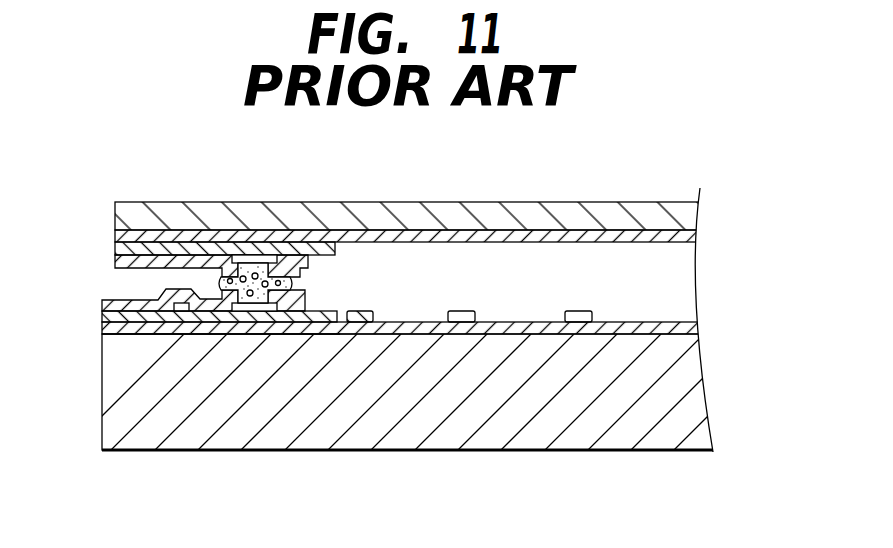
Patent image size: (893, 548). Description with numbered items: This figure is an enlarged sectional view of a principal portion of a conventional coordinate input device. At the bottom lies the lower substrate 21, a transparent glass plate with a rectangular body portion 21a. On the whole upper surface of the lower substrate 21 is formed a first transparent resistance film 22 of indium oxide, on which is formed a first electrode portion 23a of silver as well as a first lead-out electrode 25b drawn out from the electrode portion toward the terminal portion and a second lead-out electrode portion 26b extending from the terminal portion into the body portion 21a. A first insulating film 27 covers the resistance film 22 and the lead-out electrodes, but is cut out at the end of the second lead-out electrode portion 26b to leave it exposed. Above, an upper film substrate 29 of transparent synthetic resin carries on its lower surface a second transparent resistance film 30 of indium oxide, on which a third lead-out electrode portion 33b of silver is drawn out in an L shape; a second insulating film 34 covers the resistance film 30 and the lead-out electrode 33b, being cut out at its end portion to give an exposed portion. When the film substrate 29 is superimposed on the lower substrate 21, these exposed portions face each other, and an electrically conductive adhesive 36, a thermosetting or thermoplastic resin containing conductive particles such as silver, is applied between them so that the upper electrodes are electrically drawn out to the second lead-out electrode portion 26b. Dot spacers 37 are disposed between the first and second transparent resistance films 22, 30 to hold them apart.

The upper film substrate 29 is at (640, 209).
The second transparent resistance film 30 is at (171, 231).
The second insulating film 34 is at (115, 263).
The third lead-out electrode portion 33b is at (258, 252).
The electrically conductive adhesive 36 is at (296, 280).
The first insulating film 27 is at (102, 317).
The second lead-out electrode portion 26b is at (250, 312).
The first electrode portion 23a is at (368, 311).
The dot spacers 37 is at (577, 311).
The first transparent resistance film 22 is at (695, 328).
The first lead-out electrode 25b is at (140, 337).
The lower substrate 21 is at (586, 457).
The body portion 21a is at (443, 433).